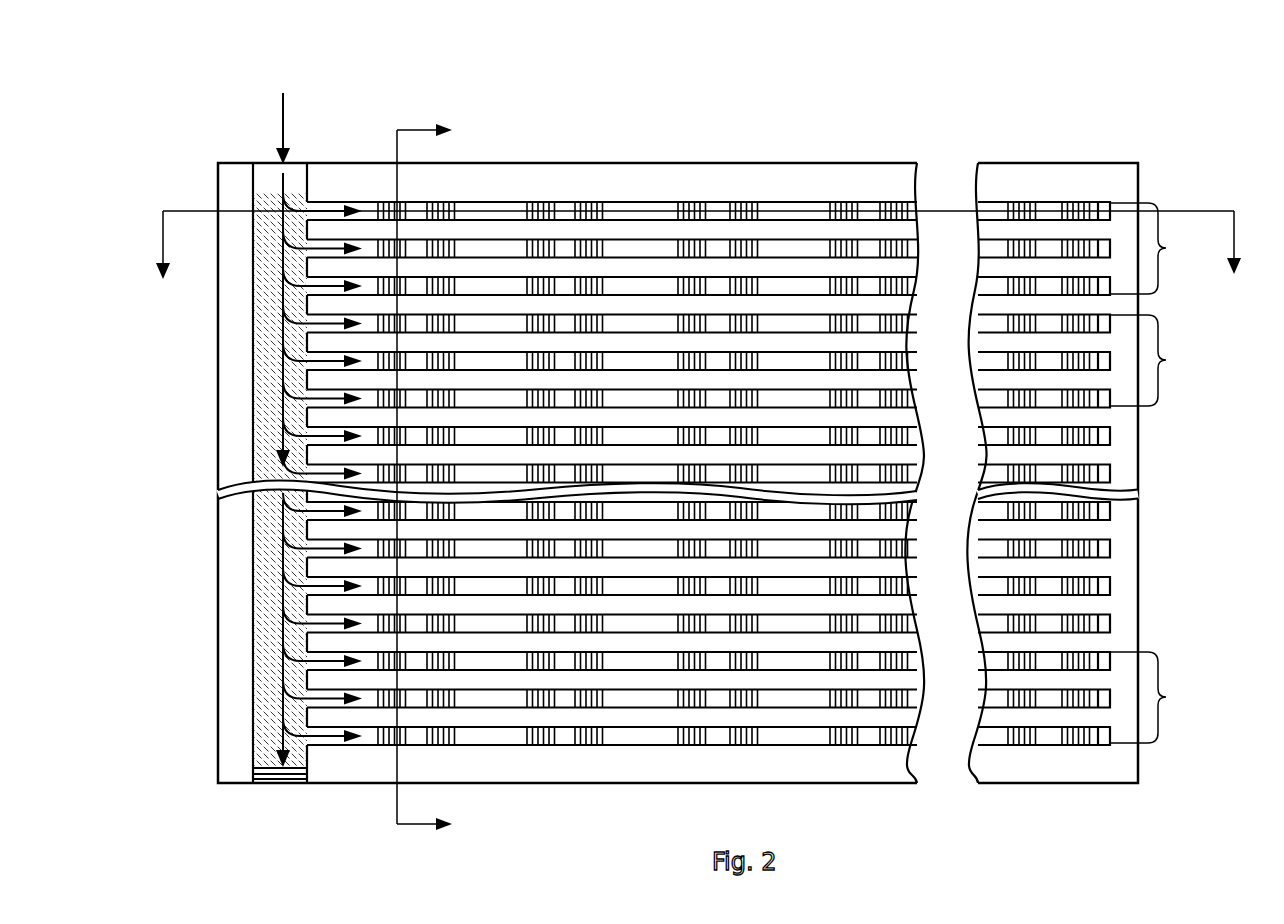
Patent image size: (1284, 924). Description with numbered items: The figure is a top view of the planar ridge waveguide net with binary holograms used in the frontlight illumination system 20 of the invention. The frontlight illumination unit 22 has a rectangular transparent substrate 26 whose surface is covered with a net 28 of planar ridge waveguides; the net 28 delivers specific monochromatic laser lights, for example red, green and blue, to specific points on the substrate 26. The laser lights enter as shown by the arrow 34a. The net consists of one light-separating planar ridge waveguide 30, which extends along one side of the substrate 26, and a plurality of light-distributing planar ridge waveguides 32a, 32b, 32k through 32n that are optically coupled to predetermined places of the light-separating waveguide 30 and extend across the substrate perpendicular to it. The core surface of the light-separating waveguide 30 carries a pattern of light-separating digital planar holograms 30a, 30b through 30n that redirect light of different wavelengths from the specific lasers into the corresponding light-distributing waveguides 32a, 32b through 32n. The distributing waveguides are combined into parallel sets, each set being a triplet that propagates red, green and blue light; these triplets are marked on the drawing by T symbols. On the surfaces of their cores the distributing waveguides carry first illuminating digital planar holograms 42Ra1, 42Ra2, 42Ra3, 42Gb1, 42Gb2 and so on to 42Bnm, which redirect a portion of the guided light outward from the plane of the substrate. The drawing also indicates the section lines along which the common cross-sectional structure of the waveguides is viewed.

The display apparatus 20 is at (698, 441).
The frontlight illumination unit 22 is at (691, 158).
The rectangular transparent substrate 26 is at (1030, 183).
The net of planar ridge waveguides 28 is at (763, 265).
The light-separating planar ridge waveguide 30 is at (252, 193).
The light-separating digital planar hologram 30a is at (265, 222).
The light-separating digital planar hologram 30b is at (265, 245).
The light-separating digital planar hologram 30n is at (265, 735).
The light-distributing planar ridge waveguide 32a is at (705, 133).
The light-distributing planar ridge waveguide 32b is at (705, 138).
The light-distributing planar ridge waveguide 32k is at (363, 332).
The light-distributing planar ridge waveguide 32n is at (710, 781).
The arrow showing laser lights 34a is at (283, 107).
The first illuminating digital planar hologram 42Ra1 is at (380, 204).
The first illuminating digital planar hologram 42Ra2 is at (446, 212).
The first illuminating digital planar hologram 42Ra3 is at (537, 203).
The first illuminating digital planar hologram 42Gb1 is at (399, 245).
The first illuminating digital planar hologram 42Gb2 is at (446, 250).
The first illuminating digital planar hologram 42Bnm is at (1074, 744).